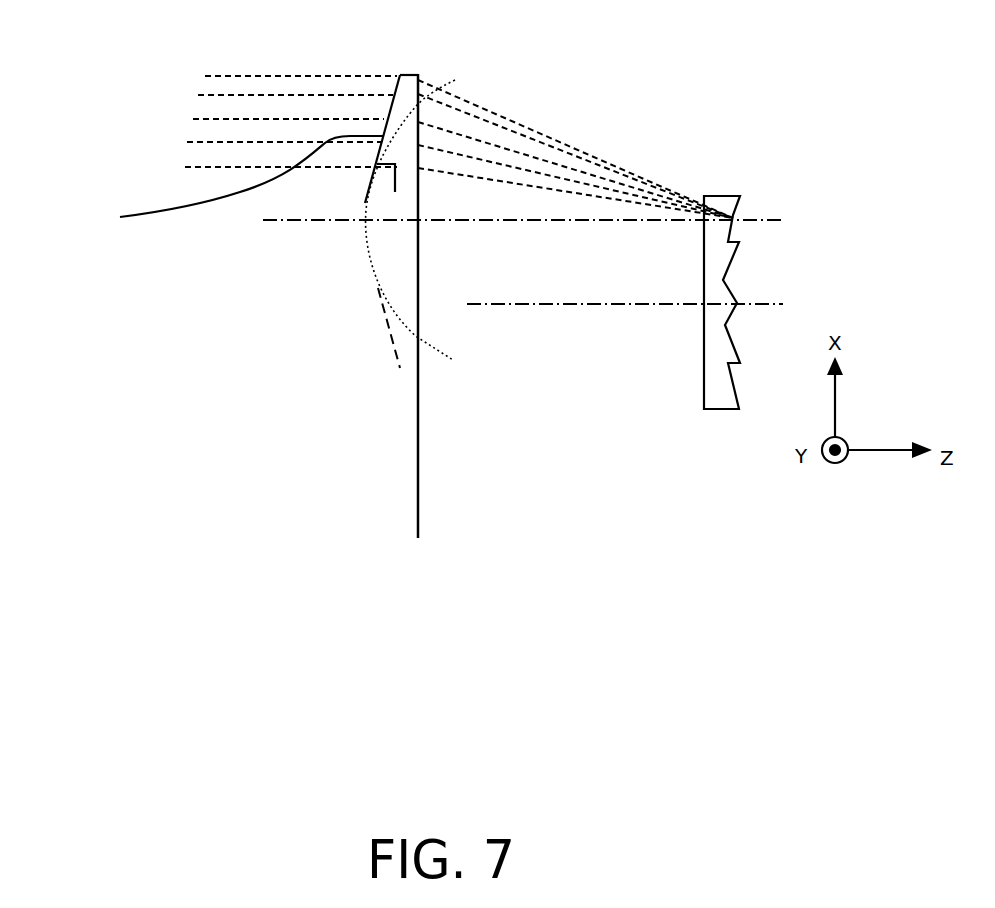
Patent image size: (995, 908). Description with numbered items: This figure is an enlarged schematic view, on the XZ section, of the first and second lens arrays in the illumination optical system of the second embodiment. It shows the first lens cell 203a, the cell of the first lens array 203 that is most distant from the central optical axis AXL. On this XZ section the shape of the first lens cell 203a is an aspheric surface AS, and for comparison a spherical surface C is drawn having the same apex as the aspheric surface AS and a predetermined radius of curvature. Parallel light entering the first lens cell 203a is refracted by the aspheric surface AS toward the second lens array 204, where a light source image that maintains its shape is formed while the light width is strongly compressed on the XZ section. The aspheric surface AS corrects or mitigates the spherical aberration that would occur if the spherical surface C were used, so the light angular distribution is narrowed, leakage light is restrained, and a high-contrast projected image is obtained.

The first lens cell 203a is at (216, 181).
The first lens array 203 is at (405, 186).
The aspheric surface AS is at (401, 90).
The spherical surface C is at (433, 348).
The central optical axis AXL is at (750, 303).
The second lens array 204 is at (722, 390).